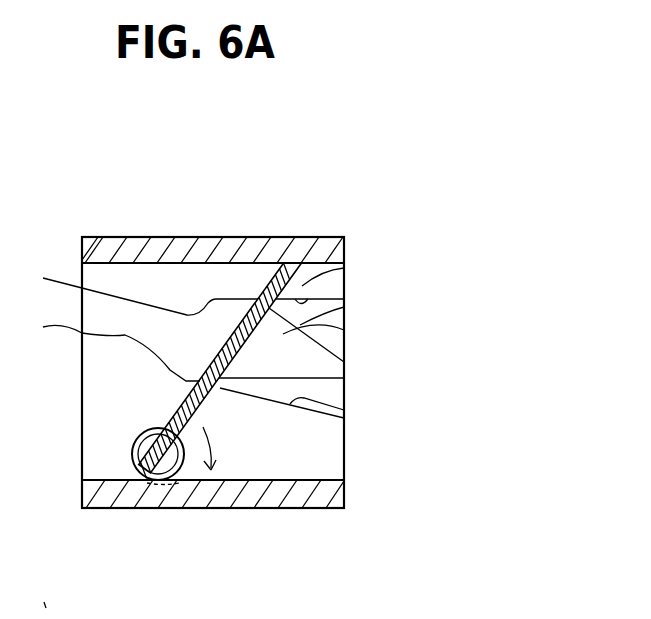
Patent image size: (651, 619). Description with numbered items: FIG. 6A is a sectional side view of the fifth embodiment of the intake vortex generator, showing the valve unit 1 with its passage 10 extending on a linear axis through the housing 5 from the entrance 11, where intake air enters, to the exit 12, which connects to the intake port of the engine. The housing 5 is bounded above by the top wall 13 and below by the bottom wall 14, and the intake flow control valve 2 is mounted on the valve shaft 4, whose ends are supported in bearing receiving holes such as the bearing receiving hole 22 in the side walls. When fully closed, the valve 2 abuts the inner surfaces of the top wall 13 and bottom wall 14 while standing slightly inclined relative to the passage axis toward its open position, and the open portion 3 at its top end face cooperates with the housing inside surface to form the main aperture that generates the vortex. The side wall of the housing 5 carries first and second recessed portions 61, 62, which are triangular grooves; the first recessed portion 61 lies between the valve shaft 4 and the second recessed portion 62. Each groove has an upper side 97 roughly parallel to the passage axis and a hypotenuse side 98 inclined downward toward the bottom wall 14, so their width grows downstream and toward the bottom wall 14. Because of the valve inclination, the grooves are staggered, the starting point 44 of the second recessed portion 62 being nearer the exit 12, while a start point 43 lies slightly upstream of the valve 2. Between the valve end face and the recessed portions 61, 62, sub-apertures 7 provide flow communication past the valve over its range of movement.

The valve unit 1 is at (66, 191).
The intake flow control valve 2 is at (268, 288).
The open portion 3 is at (293, 237).
The valve shaft 4 is at (152, 468).
The housing 5 is at (129, 236).
The sub-apertures 7 is at (345, 383).
The passage 10 is at (210, 237).
The entrance 11 is at (82, 368).
The exit 12 is at (345, 446).
The top wall 13 is at (180, 237).
The bottom wall 14 is at (237, 500).
The bearing receiving hole 22 is at (132, 455).
The start point 43 is at (175, 347).
The starting point 44 is at (175, 288).
The first recessed portion 61 is at (344, 409).
The second recessed portion 62 is at (344, 306).
The upper side 97 is at (344, 271).
The hypotenuse side 98 is at (344, 330).